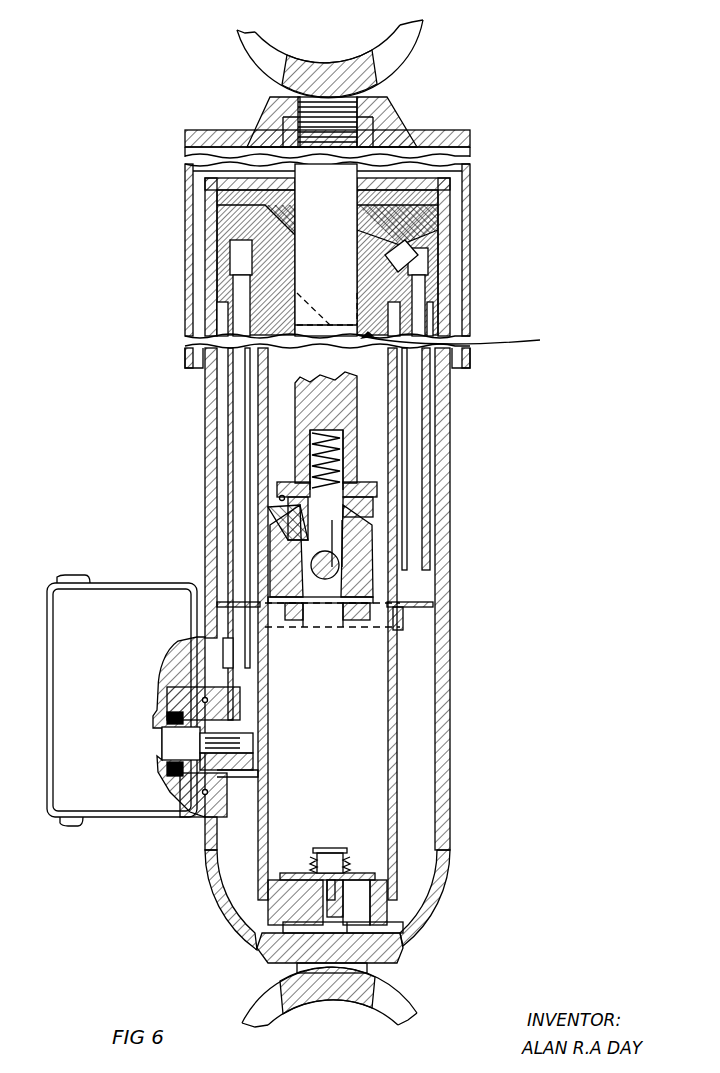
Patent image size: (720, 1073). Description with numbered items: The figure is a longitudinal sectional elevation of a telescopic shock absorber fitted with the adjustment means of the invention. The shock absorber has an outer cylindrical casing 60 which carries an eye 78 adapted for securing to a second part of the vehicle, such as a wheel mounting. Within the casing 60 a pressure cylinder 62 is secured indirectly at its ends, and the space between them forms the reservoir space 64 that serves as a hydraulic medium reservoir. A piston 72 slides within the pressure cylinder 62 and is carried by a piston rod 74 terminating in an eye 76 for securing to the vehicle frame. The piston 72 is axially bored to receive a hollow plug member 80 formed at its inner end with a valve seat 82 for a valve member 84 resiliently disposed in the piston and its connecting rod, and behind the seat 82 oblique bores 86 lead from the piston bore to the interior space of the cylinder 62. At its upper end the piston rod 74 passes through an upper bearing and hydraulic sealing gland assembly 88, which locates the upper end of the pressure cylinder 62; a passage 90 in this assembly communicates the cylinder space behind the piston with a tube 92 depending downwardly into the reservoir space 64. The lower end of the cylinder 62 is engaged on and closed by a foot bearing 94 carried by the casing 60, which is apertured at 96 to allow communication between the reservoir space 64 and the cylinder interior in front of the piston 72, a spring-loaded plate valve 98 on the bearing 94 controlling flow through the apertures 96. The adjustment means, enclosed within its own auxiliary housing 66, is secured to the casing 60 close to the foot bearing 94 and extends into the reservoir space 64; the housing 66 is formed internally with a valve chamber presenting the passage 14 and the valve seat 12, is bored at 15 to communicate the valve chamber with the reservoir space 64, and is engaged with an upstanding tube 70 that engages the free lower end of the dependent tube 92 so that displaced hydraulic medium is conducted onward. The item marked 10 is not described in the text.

The fitting 10 is at (200, 745).
The valve seat 12 is at (218, 793).
The passage 14 is at (270, 753).
The bore 15 is at (270, 793).
The outer cylindrical casing 60 is at (447, 682).
The pressure cylinder 62 is at (387, 717).
The reservoir space 64 is at (415, 757).
The auxiliary housing 66 is at (130, 598).
The upstanding tube 70 is at (270, 657).
The piston 72 is at (357, 583).
The piston rod 74 is at (340, 360).
The eye 76 is at (385, 38).
The eye 78 is at (383, 1013).
The hollow plug member 80 is at (357, 623).
The valve seat 82 is at (367, 560).
The valve member 84 is at (300, 537).
The oblique bores 86 is at (283, 518).
The upper bearing and hydraulic sealing gland assembly 88 is at (427, 341).
The passage 90 is at (237, 297).
The tube 92 is at (227, 403).
The foot bearing 94 is at (357, 912).
The apertures 96 is at (400, 952).
The spring-loaded plate valve 98 is at (357, 873).